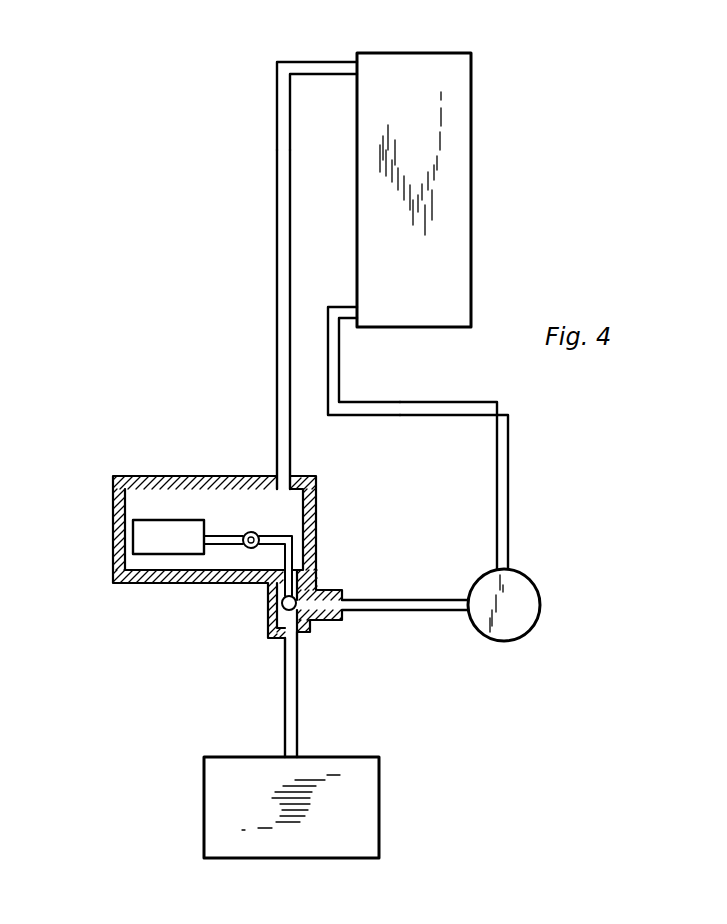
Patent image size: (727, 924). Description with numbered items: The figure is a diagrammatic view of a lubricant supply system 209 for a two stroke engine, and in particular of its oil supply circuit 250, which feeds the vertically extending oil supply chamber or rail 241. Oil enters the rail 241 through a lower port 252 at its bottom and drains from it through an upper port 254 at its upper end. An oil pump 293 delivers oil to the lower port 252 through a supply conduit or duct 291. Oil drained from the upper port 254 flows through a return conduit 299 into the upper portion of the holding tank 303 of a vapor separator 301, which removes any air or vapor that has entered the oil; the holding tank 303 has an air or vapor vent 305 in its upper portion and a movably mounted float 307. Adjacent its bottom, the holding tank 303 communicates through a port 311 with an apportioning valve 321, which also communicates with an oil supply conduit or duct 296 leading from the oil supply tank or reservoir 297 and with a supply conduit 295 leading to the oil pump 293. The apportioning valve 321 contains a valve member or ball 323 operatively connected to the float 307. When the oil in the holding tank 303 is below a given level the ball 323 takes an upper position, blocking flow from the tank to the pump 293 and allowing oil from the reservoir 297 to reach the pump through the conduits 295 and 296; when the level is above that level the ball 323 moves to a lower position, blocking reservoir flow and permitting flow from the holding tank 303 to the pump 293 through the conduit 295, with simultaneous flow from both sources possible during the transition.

The lubricant supply system 209 is at (478, 227).
The oil supply chamber or rail 241 is at (420, 104).
The oil supply circuit 250 is at (262, 244).
The lower port 252 is at (358, 313).
The upper port 254 is at (357, 67).
The supply conduit or duct 291 is at (502, 490).
The oil pump 293 is at (518, 585).
The supply conduit 295 is at (456, 612).
The oil supply conduit or duct 296 is at (292, 706).
The oil supply tank or reservoir 297 is at (345, 796).
The return conduit 299 is at (284, 150).
The vapor separator 301 is at (115, 592).
The holding tank 303 is at (210, 557).
The air or vapor vent 305 is at (146, 488).
The float 307 is at (145, 528).
The port 311 is at (303, 578).
The apportioning valve 321 is at (258, 650).
The valve member or ball 323 is at (327, 588).